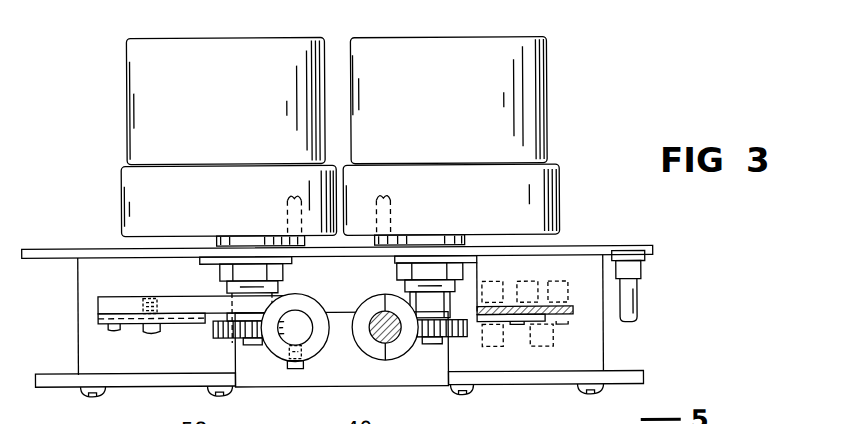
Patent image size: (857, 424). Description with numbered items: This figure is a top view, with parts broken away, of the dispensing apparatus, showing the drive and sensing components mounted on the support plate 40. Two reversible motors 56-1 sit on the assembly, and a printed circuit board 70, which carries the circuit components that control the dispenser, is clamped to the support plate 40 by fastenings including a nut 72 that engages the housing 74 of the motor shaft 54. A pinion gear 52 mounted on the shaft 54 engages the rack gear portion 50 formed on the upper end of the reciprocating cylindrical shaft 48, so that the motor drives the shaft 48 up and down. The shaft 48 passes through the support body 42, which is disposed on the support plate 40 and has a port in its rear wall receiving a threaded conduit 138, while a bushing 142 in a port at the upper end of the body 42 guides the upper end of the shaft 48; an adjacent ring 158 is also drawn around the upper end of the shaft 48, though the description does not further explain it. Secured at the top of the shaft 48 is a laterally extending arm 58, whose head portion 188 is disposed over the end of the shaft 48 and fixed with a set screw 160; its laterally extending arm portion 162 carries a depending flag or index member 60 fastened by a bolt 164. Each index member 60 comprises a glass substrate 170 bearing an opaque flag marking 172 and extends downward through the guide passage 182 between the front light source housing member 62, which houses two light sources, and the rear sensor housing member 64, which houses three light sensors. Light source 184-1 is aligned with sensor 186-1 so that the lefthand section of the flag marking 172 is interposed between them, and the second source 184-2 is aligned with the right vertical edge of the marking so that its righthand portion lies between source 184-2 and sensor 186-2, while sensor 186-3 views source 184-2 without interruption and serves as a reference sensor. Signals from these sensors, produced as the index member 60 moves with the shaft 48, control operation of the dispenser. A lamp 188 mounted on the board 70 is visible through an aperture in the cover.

The reversible motor 56-1 is at (128, 71).
The conduit 138 is at (284, 200).
The support plate 40 is at (213, 257).
The printed circuit board 70 is at (45, 247).
The nut 72 is at (220, 272).
The housing 74 is at (227, 287).
The front member 62 is at (78, 290).
The arm 58 is at (168, 295).
The index member 60 is at (98, 318).
The arm portion 162 is at (136, 295).
The guide passage 182 is at (118, 330).
The bolt 164 is at (153, 332).
The support body 42 is at (270, 386).
The pinion gear 52 is at (218, 338).
The motor shaft 54 is at (249, 344).
The bearing ring 158 is at (296, 300).
The shaft 48 is at (301, 325).
The bushing 142 is at (370, 345).
The rack gear portion 50 is at (394, 344).
The set screw 160 is at (298, 368).
The rear member 64 is at (78, 342).
The glass substrate 170 is at (567, 307).
The sensor 186-1 is at (482, 292).
The sensor 186-2 is at (523, 282).
The reference sensor 186-3 is at (566, 282).
The light source 184-1 is at (492, 347).
The light source 184-2 is at (540, 347).
The flag marking 172 is at (523, 325).
The head portion 188 is at (637, 305).